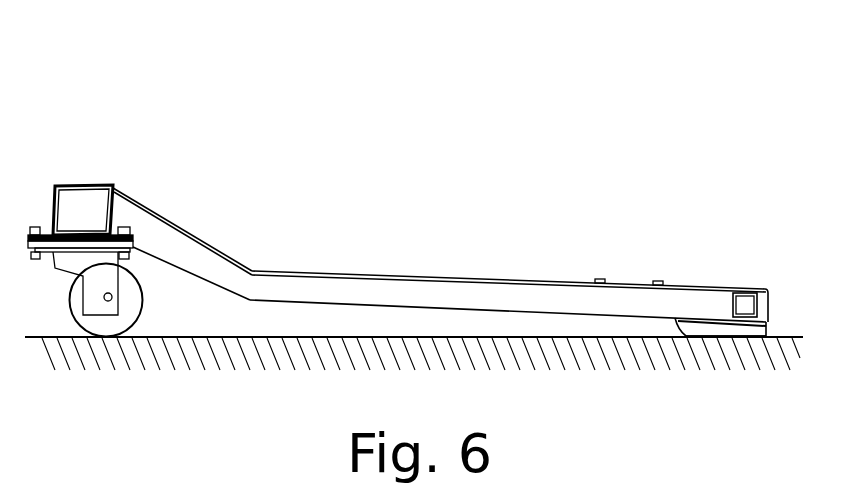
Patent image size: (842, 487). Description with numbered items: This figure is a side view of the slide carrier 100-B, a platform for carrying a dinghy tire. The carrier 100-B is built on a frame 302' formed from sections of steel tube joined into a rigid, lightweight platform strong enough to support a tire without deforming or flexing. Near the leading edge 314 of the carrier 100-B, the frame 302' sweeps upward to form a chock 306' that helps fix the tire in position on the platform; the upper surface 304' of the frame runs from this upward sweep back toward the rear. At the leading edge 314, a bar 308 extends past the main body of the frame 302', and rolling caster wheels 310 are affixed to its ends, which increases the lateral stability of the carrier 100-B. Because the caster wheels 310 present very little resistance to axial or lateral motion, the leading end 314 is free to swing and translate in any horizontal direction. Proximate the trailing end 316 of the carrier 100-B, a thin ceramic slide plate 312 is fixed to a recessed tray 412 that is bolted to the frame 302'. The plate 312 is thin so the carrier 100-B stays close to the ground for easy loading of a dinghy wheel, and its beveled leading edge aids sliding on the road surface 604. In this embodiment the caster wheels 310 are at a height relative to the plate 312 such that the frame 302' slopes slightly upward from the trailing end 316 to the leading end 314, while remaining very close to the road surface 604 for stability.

The slide carrier 100-B is at (640, 91).
The road surface 604 is at (55, 337).
The leading edge 314 is at (149, 155).
The bar 308 is at (80, 185).
The rolling caster wheels 310 is at (146, 302).
The chock 306' is at (185, 244).
The frame 302' is at (509, 262).
The ramp top surface 304' is at (509, 258).
The trailing end 316 is at (721, 211).
The recessed tray 412 is at (675, 320).
The ceramic slide plate 312 is at (708, 336).